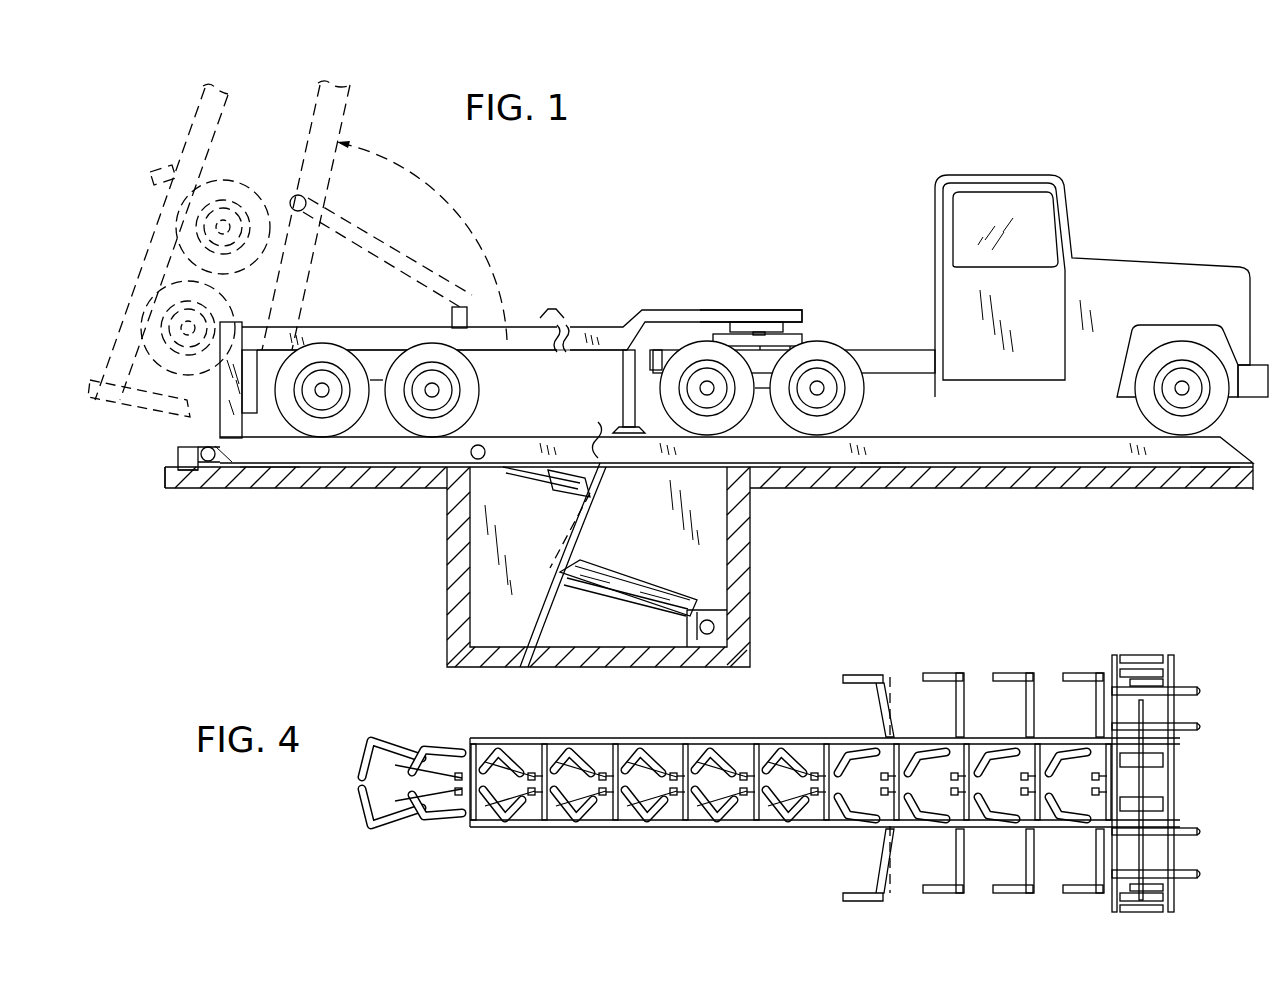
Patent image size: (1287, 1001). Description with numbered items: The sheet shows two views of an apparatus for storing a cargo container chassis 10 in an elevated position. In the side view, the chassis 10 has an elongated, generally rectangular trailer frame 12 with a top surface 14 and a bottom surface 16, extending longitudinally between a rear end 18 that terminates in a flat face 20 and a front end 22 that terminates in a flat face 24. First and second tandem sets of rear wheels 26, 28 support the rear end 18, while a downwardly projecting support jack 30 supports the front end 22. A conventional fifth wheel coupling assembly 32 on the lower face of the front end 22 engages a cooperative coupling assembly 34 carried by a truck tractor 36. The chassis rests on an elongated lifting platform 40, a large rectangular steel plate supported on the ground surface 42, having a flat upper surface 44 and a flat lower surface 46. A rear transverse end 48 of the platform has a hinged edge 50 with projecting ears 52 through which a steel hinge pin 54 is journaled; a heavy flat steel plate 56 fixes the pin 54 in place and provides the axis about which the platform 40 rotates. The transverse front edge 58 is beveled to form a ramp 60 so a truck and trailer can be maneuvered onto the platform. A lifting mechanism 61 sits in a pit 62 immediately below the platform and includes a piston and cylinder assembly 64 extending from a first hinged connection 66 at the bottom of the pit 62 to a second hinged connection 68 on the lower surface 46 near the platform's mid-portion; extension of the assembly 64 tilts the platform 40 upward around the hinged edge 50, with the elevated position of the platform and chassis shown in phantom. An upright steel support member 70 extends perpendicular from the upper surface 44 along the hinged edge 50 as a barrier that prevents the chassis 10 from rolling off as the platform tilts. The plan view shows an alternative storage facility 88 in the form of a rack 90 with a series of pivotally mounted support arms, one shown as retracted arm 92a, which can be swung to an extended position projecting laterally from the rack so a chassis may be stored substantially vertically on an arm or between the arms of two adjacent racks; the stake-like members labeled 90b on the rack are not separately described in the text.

In FIG. 1, the cargo container chassis 10 is at (578, 291).
In FIG. 4, the cargo container chassis 10 is at (1146, 654).
In FIG. 1, the trailer frame 12 is at (153, 243).
In FIG. 1, the top surface 14 is at (605, 326).
In FIG. 1, the bottom surface 16 is at (518, 350).
In FIG. 1, the rear end 18 is at (290, 336).
In FIG. 1, the flat face 20 is at (248, 338).
In FIG. 1, the front end 22 is at (767, 309).
In FIG. 1, the flat face 24 is at (790, 334).
In FIG. 1, the first tandem set of rear wheels 26 is at (322, 440).
In FIG. 1, the second tandem set of rear wheels 28 is at (432, 440).
In FIG. 1, the support jack 30 is at (624, 400).
In FIG. 1, the fifth wheel coupling assembly 32 is at (752, 321).
In FIG. 1, the cooperative coupling assembly 34 is at (805, 335).
In FIG. 1, the truck tractor 36 is at (1091, 210).
In FIG. 1, the lifting platform 40 is at (928, 450).
In FIG. 1, the ground surface 42 is at (165, 470).
In FIG. 1, the upper surface 44 is at (895, 436).
In FIG. 1, the lower surface 46 is at (862, 468).
In FIG. 1, the rear transverse end 48 is at (258, 470).
In FIG. 1, the hinged edge 50 is at (208, 464).
In FIG. 1, the projecting ears 52 is at (185, 472).
In FIG. 1, the hinge pin 54 is at (225, 458).
In FIG. 1, the flat steel plate 56 is at (178, 458).
In FIG. 1, the front edge 58 is at (1210, 455).
In FIG. 1, the ramp 60 is at (1232, 447).
In FIG. 1, the lifting mechanism 61 is at (613, 556).
In FIG. 1, the pit 62 is at (490, 590).
In FIG. 1, the piston and cylinder assembly 64 is at (370, 230).
In FIG. 1, the first hinged connection 66 is at (715, 627).
In FIG. 1, the second hinged connection 68 is at (485, 452).
In FIG. 1, the upright support member 70 is at (190, 402).
In FIG. 4, the storage facility 88 is at (609, 849).
In FIG. 4, the rack 90 is at (690, 740).
In FIG. 4, the side stake 90b is at (948, 673).
In FIG. 4, the retracted support arm 92a is at (582, 752).